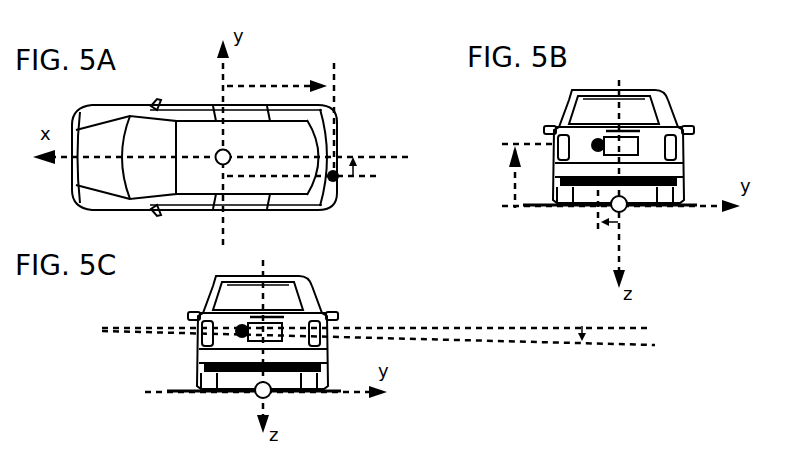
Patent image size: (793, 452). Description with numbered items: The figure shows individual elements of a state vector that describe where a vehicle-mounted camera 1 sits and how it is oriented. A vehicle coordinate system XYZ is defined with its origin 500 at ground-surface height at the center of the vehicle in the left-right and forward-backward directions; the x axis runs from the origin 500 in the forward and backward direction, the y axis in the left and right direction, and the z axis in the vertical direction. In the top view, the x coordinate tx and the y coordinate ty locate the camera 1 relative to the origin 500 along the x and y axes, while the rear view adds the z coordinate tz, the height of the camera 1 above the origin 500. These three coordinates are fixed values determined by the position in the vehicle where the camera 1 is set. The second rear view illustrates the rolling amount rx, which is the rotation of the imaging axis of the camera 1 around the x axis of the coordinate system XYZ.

In FIG. 5A, the camera 1 is at (335, 150).
In FIG. 5B, the camera 1 is at (593, 146).
In FIG. 5C, the camera 1 is at (236, 331).
In FIG. 5A, the origin 500 is at (231, 162).
In FIG. 5B, the origin 500 is at (627, 208).
In FIG. 5C, the origin 500 is at (272, 393).
In FIG. 5A, the x coordinate of the camera tx is at (280, 116).
In FIG. 5A, the y coordinate of the camera ty is at (302, 179).
In FIG. 5B, the y coordinate of the camera ty is at (605, 221).
In FIG. 5B, the z coordinate of the camera tz is at (517, 176).
In FIG. 5C, the rolling amount rx is at (588, 333).